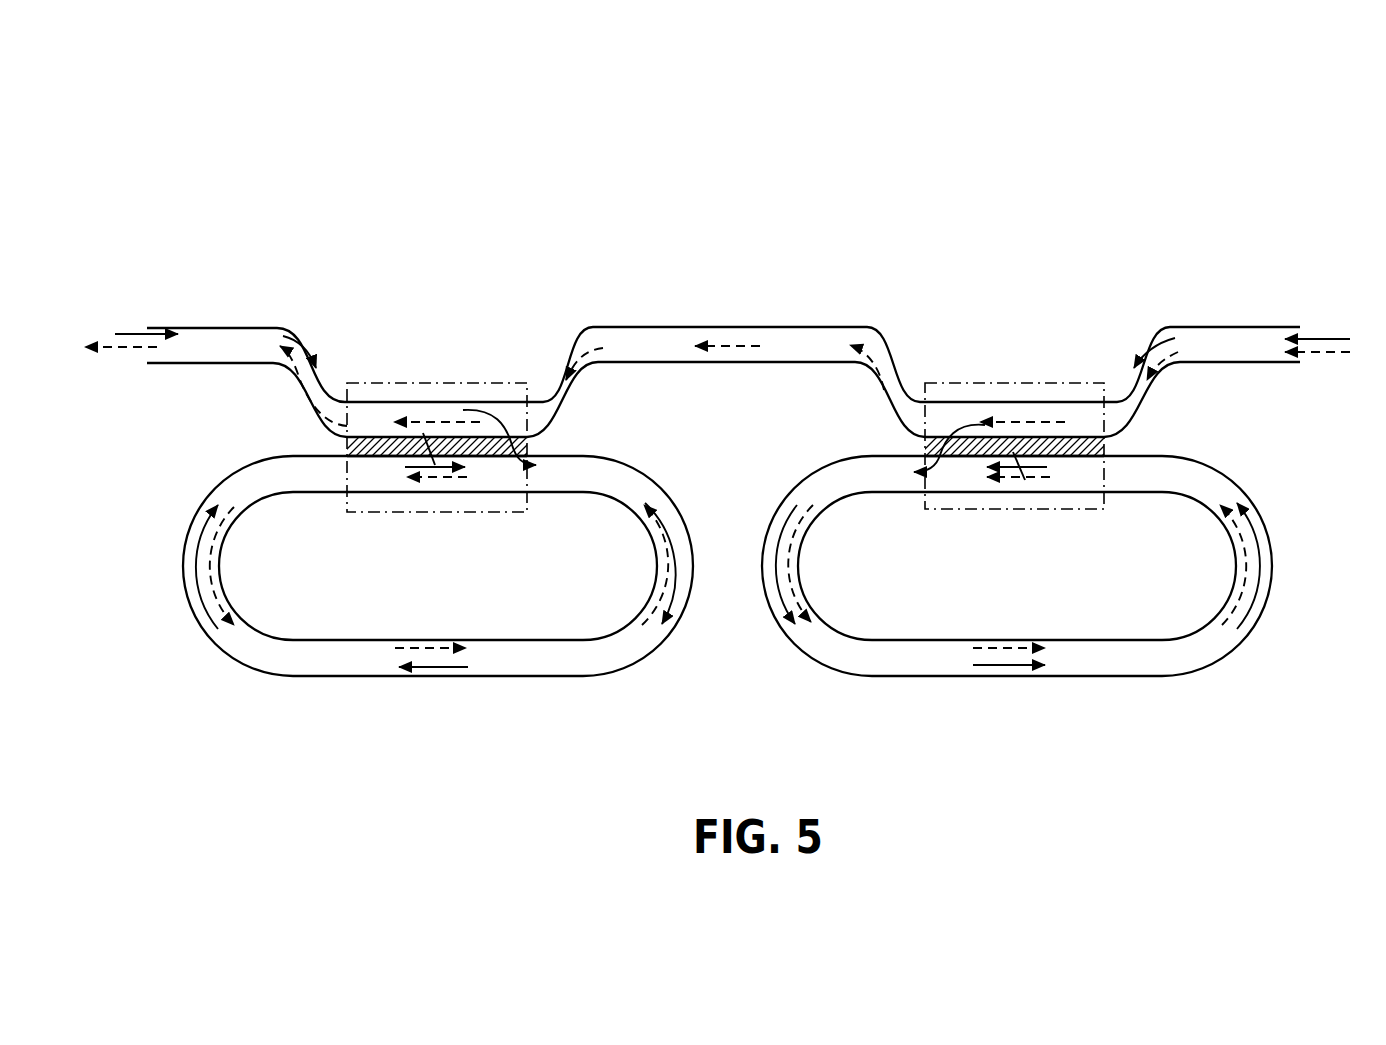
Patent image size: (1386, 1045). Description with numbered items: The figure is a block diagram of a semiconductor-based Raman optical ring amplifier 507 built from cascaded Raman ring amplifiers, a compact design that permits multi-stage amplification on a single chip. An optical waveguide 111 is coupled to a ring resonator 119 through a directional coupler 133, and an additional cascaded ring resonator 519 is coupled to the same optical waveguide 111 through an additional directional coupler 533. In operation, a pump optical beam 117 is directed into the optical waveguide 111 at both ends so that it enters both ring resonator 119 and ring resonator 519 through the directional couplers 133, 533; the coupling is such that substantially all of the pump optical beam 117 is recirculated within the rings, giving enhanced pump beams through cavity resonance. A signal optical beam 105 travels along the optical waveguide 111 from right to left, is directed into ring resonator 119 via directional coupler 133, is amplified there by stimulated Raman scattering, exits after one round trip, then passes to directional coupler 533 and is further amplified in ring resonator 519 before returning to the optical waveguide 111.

The semiconductor-based Raman optical ring amplifier 507 is at (498, 242).
The optical waveguide 111 is at (225, 328).
The signal optical beam 105 is at (103, 347).
The pump optical beam 117 is at (130, 334).
The directional coupler 533 is at (395, 383).
The directional coupler 133 is at (970, 383).
The ring resonator 519 is at (570, 678).
The ring resonator 119 is at (1145, 677).